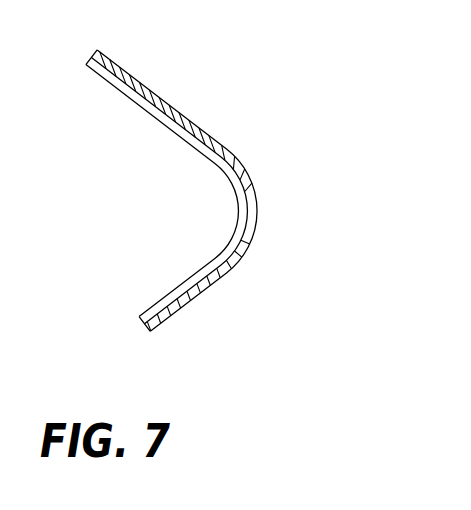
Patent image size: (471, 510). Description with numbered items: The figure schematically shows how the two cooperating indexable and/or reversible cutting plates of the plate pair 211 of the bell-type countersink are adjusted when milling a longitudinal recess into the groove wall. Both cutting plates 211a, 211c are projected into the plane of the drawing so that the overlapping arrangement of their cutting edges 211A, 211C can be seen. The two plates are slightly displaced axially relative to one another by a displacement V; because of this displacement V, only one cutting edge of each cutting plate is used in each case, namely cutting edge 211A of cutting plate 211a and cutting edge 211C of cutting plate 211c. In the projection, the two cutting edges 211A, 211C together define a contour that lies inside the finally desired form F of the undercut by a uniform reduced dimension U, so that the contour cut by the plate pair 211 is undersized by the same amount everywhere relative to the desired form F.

The plate pair 211 is at (185, 210).
The cutting plate 211a is at (128, 87).
The cutting plate 211c is at (167, 33).
The cutting edge 211C is at (203, 128).
The cutting edge 211A is at (177, 326).
The uniform reduced dimension U is at (138, 78).
The displacement V is at (207, 142).
The finally desired form F is at (258, 213).